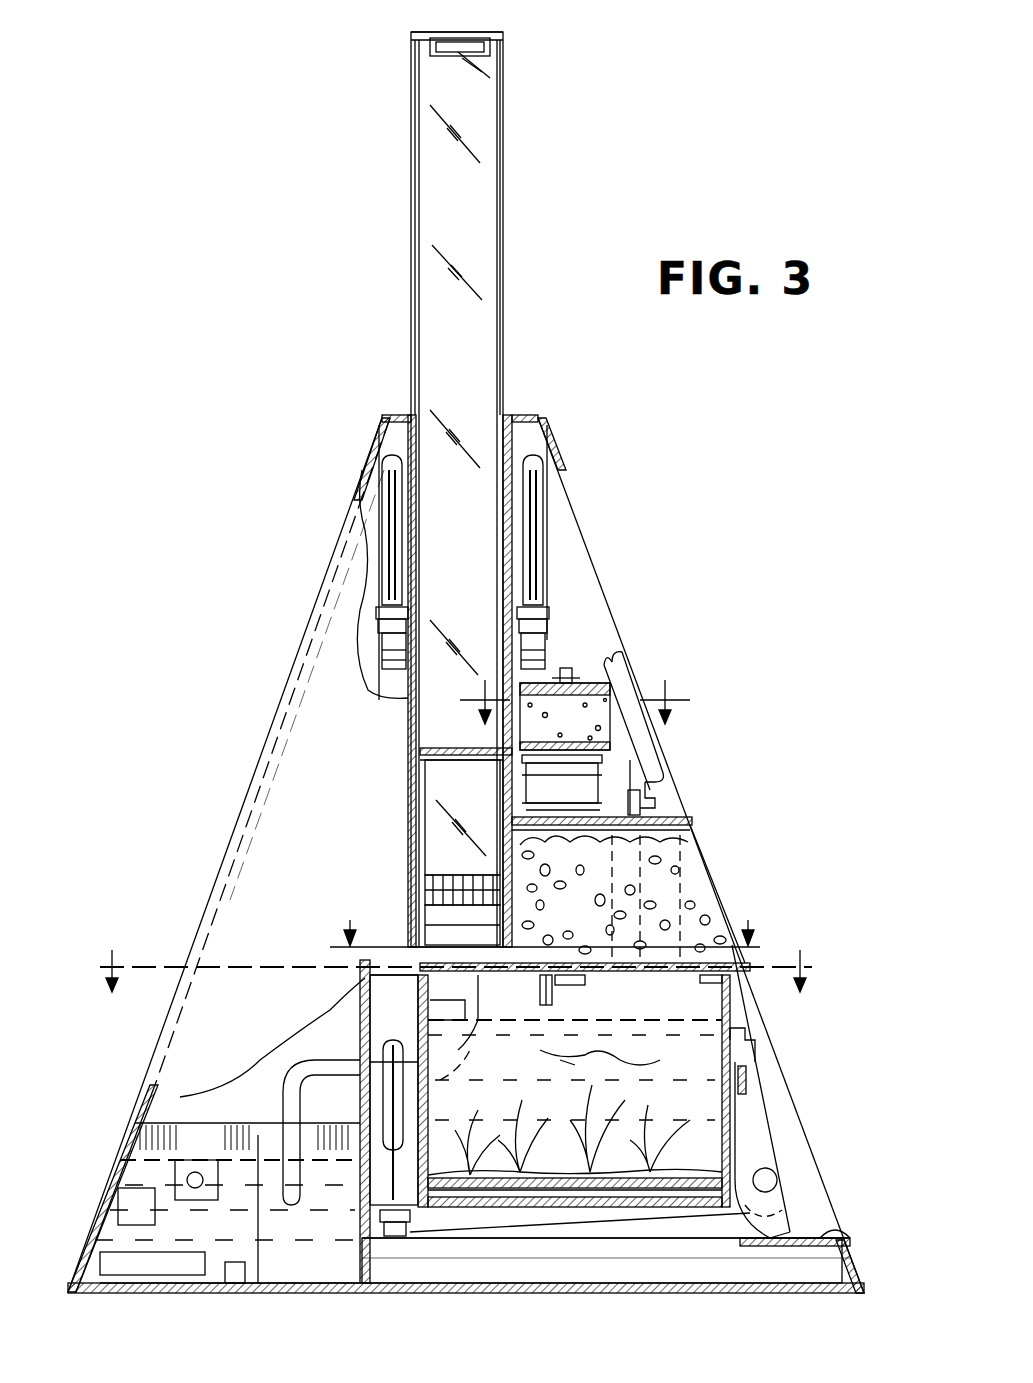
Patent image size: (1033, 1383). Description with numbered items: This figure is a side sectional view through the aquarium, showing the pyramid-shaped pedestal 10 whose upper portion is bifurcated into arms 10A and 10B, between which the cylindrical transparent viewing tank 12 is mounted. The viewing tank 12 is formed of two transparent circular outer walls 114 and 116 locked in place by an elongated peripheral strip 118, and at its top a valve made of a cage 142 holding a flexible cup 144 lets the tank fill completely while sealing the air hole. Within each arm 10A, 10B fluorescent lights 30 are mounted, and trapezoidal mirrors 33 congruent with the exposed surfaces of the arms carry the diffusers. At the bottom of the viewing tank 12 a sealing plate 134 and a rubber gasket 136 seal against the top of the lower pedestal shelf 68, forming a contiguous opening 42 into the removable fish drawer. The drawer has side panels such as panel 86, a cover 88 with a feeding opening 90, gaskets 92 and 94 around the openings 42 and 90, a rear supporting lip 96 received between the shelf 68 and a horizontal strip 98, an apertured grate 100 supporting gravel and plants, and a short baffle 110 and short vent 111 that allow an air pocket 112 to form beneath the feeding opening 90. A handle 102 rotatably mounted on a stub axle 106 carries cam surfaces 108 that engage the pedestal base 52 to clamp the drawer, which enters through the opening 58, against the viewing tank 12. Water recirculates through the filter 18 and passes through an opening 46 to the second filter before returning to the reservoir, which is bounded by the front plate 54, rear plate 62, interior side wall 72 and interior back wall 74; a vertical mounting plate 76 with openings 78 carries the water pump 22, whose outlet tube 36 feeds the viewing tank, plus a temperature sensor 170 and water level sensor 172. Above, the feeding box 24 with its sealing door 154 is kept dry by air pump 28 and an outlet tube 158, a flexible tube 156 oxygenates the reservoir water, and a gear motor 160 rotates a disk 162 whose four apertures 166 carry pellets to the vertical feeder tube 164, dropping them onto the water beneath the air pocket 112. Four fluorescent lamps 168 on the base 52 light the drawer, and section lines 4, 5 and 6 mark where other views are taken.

The pyramid-shaped pedestal 10 is at (264, 684).
The pedestal arm 10A is at (363, 748).
The pedestal arm 10B is at (570, 540).
The cylindrical transparent viewing tank 12 is at (504, 296).
The transparent circular outer wall 114 is at (411, 224).
The transparent circular outer wall 116 is at (503, 198).
The elongated peripheral strip 118 is at (490, 36).
The cage 142 is at (442, 60).
The flexible cup 144 is at (448, 46).
The fluorescent lights 30 is at (392, 463).
The mirrors 33 is at (414, 612).
The door 154 is at (570, 678).
The disk 162 is at (583, 733).
The apertures 166 is at (560, 758).
The outlet tube 158 is at (652, 742).
The air pump 28 is at (658, 798).
The filter 18 is at (690, 830).
The front plate 54 is at (704, 866).
The flexible tube 156 is at (706, 882).
The vertical feeder tube 164 is at (690, 872).
The opening 46 is at (623, 895).
The cover 88 is at (576, 938).
The feeding box 24 is at (503, 728).
The gear motor 160 is at (500, 780).
The supporting lip 96 is at (394, 940).
The opening 42 is at (472, 945).
The section line 4- 4 is at (456, 960).
The section line 5- 5 is at (545, 923).
The section line 6- 6 is at (575, 693).
The rear plate 62 is at (214, 822).
The lower shelf 68 is at (268, 967).
The interior side wall 72 is at (355, 983).
The horizontal strip 98 is at (394, 1090).
The interior back wall 74 is at (355, 1038).
The outlet tube 36 is at (283, 1093).
The vertical mounting plate 76 is at (250, 1126).
The water pump 22 is at (262, 1238).
The temperature sensor 170 is at (120, 1196).
The water level sensor 172 is at (195, 1189).
The openings 78 is at (100, 1275).
The base 52 is at (238, 1290).
The feeding opening 90 is at (558, 986).
The gasket 92 is at (540, 994).
The gasket 94 is at (668, 986).
The sealing plate 134 is at (444, 1017).
The rubber gasket 136 is at (481, 1027).
The baffle 110 is at (555, 1018).
The air pocket 112 is at (600, 1055).
The vent 111 is at (572, 1079).
The apertured grate 100 is at (536, 1168).
The side panel 86 is at (506, 1213).
The fluorescent lamps 168 is at (394, 1236).
The handle 102 is at (756, 1088).
The stub axle 106 is at (777, 1178).
The opening 58 is at (834, 1234).
The cam surfaces 108 is at (779, 1243).